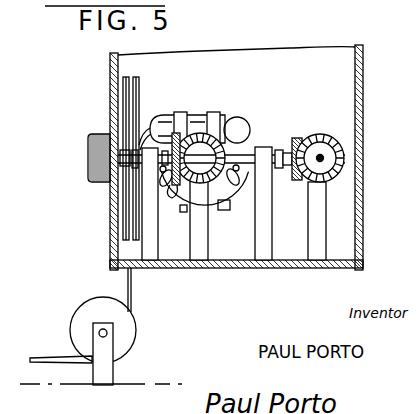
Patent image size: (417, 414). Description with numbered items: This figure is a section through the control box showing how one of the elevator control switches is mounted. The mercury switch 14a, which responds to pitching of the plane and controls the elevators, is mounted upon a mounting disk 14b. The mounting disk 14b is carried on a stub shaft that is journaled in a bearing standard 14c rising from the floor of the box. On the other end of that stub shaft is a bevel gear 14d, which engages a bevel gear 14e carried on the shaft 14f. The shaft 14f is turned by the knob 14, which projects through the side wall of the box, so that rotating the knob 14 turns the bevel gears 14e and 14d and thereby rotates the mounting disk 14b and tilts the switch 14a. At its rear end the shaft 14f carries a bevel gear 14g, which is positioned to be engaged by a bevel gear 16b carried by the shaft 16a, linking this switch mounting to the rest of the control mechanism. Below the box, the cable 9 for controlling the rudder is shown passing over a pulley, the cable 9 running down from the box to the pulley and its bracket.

The cable 9 is at (51, 359).
The knob 14 is at (98, 183).
The mercury switch 14a is at (238, 118).
The mounting disk 14b is at (209, 225).
The bearing standard 14c is at (201, 240).
The bevel gear 14d is at (200, 134).
The bevel gear 14e is at (177, 208).
The shaft 14f is at (242, 148).
The bevel gear 14g is at (297, 138).
The shaft 16a is at (323, 158).
The bevel gear 16b is at (338, 143).